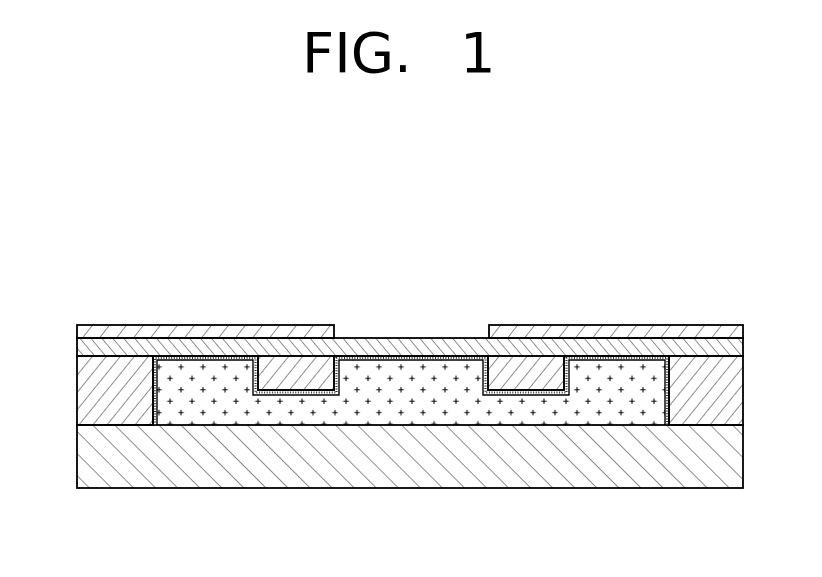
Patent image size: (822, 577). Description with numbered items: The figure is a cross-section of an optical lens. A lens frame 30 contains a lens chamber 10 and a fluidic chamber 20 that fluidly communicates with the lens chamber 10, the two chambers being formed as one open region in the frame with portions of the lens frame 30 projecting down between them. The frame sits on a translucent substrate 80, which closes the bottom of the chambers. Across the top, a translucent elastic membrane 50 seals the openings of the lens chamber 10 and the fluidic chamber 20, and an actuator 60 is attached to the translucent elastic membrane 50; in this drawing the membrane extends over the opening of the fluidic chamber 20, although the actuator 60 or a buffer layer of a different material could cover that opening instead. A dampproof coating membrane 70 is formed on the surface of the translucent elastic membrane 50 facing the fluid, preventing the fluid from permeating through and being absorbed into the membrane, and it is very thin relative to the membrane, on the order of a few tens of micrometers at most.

The lens chamber 10 is at (393, 388).
The fluidic chamber 20 is at (200, 392).
The lens frame 30 is at (88, 384).
The translucent elastic membrane 50 is at (394, 345).
The actuator 60 is at (185, 333).
The dampproof coating membrane 70 is at (452, 360).
The translucent substrate 80 is at (300, 472).